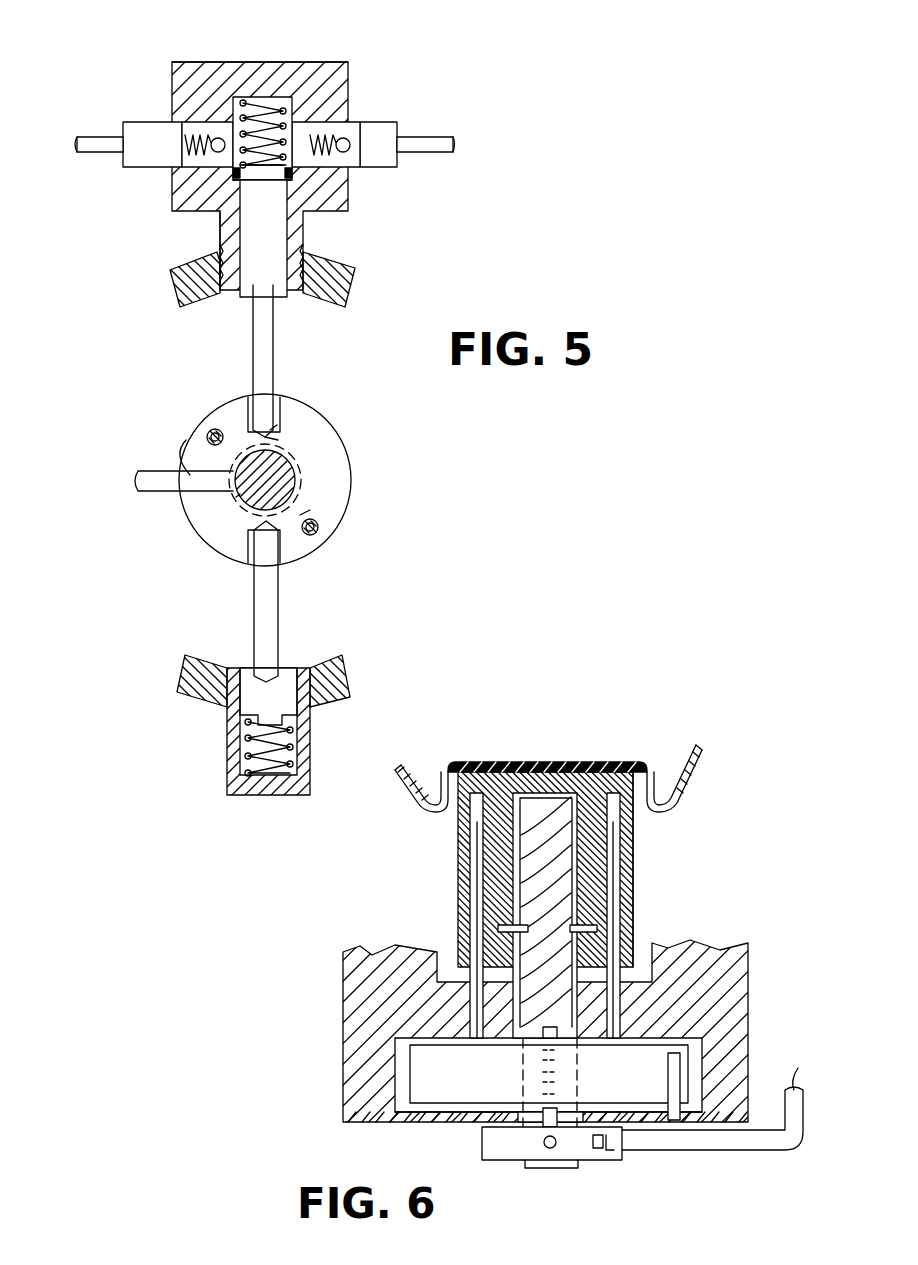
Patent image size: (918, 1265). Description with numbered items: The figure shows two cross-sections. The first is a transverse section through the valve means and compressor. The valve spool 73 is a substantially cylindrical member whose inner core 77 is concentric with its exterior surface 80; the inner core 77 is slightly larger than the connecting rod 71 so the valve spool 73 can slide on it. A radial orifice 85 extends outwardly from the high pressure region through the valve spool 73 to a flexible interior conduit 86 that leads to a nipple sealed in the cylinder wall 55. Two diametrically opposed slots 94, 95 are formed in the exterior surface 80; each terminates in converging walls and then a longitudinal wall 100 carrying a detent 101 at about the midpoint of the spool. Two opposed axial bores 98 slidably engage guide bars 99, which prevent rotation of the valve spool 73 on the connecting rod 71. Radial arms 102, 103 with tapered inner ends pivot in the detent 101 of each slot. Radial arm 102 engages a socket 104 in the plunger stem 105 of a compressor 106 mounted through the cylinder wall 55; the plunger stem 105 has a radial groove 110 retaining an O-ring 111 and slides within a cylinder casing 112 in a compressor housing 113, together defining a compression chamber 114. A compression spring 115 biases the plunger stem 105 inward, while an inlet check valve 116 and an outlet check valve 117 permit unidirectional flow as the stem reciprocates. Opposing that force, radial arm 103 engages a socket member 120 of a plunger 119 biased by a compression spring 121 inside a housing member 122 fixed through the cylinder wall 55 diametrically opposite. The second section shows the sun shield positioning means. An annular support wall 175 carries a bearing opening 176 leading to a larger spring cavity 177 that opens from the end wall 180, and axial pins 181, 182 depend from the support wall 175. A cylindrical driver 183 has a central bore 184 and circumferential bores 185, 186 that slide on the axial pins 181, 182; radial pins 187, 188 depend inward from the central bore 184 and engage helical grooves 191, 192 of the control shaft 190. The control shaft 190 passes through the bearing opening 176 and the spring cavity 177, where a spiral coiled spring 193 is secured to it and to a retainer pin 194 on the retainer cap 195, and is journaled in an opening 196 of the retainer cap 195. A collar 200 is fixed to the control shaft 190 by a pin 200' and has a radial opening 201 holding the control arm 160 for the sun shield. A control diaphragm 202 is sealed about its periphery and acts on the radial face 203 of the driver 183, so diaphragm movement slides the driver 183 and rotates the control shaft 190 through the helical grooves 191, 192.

In FIG. 5, the cylinder wall 55 is at (175, 283).
In FIG. 5, the connecting rod 71 is at (236, 497).
In FIG. 5, the valve spool 73 is at (300, 408).
In FIG. 5, the inner core 77 is at (287, 494).
In FIG. 5, the exterior surface 80 is at (348, 512).
In FIG. 5, the radial orifice 85 is at (186, 440).
In FIG. 5, the flexible interior conduit 86 is at (140, 482).
In FIG. 5, the slot 94 is at (248, 400).
In FIG. 5, the slot 95 is at (250, 565).
In FIG. 5, the axial bores 98 is at (212, 437).
In FIG. 5, the guide bars 99 is at (210, 432).
In FIG. 5, the longitudinal wall 100 is at (275, 430).
In FIG. 5, the detent 101 is at (278, 437).
In FIG. 5, the radial arm 102 is at (275, 340).
In FIG. 5, the radial arm 103 is at (278, 603).
In FIG. 5, the socket 104 is at (300, 262).
In FIG. 5, the plunger stem 105 is at (265, 230).
In FIG. 5, the compressor 106 is at (330, 62).
In FIG. 5, the radial groove 110 is at (235, 205).
In FIG. 5, the O-ring 111 is at (235, 173).
In FIG. 5, the cylinder casing 112 is at (230, 107).
In FIG. 5, the compressor housing 113 is at (198, 62).
In FIG. 5, the compression chamber 114 is at (282, 110).
In FIG. 5, the compression spring 115 is at (255, 110).
In FIG. 5, the inlet check valve 116 is at (390, 122).
In FIG. 5, the outlet check valve 117 is at (130, 122).
In FIG. 5, the plunger 119 is at (290, 672).
In FIG. 5, the socket member 120 is at (247, 672).
In FIG. 5, the compression spring 121 is at (262, 755).
In FIG. 5, the housing member 122 is at (285, 796).
In FIG. 6, the control arm 160 is at (800, 1050).
In FIG. 6, the annular support wall 175 is at (385, 1021).
In FIG. 6, the bearing opening 176 is at (405, 1062).
In FIG. 6, the spring cavity 177 is at (405, 1093).
In FIG. 6, the end wall 180 is at (388, 1122).
In FIG. 6, the axial pin 181 is at (475, 896).
In FIG. 6, the axial pin 182 is at (612, 873).
In FIG. 6, the driver 183 is at (628, 802).
In FIG. 6, the central bore 184 is at (620, 857).
In FIG. 6, the circumferential bore 185 is at (470, 810).
In FIG. 6, the circumferential bore 186 is at (675, 772).
In FIG. 6, the radial pin 187 is at (498, 926).
In FIG. 6, the radial pin 188 is at (583, 930).
In FIG. 6, the control shaft 190 is at (525, 805).
In FIG. 6, the helical groove 191 is at (555, 810).
In FIG. 6, the helical groove 192 is at (560, 835).
In FIG. 6, the spiral coiled spring 193 is at (465, 1097).
In FIG. 6, the retainer pin 194 is at (680, 1065).
In FIG. 6, the retainer cap 195 is at (722, 1120).
In FIG. 6, the opening 196 is at (532, 1132).
In FIG. 6, the collar 200 is at (546, 1119).
In FIG. 6, the pin 200' is at (592, 1173).
In FIG. 6, the radial opening 201 is at (615, 1158).
In FIG. 6, the control diaphragm 202 is at (408, 788).
In FIG. 6, the radial face 203 is at (475, 772).